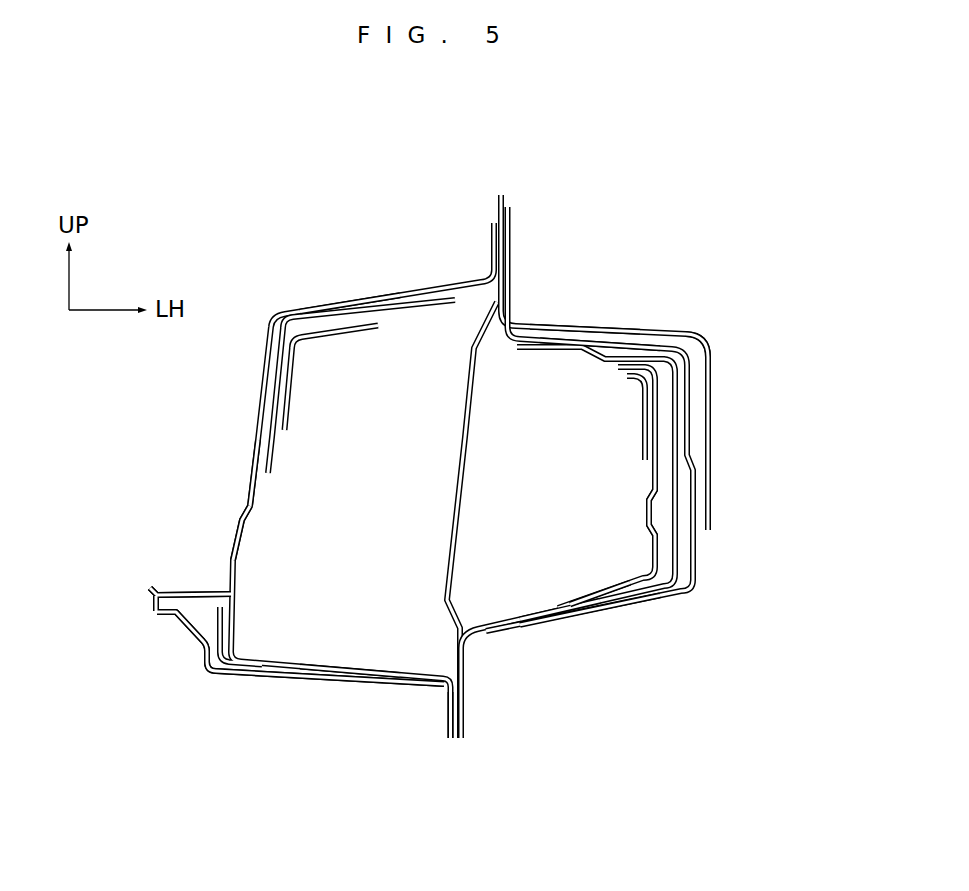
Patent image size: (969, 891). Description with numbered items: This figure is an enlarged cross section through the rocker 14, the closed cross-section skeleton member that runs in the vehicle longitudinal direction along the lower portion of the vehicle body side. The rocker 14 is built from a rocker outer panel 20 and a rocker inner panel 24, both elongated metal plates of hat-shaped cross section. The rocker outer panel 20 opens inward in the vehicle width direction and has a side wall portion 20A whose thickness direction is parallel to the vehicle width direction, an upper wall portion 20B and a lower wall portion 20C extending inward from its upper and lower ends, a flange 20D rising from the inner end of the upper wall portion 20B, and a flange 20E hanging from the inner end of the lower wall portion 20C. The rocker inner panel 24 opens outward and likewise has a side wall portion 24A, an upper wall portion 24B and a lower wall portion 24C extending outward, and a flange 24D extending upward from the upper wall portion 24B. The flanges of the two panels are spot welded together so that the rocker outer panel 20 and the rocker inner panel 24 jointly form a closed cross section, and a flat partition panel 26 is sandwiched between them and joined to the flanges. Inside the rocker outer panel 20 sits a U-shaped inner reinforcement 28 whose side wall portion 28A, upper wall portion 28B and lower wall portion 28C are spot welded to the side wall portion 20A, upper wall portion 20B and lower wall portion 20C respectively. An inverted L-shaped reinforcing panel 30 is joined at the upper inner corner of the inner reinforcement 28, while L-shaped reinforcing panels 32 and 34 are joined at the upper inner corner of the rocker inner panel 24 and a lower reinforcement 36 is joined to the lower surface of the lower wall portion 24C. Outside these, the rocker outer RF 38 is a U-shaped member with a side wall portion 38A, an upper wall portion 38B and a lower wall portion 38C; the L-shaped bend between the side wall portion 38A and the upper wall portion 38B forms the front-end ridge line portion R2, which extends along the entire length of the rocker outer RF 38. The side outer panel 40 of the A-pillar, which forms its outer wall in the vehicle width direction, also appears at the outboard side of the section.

The rocker 14 is at (231, 388).
The rocker outer panel 20 is at (668, 468).
The side wall portion 20A is at (679, 513).
The upper wall portion 20B is at (563, 341).
The lower wall portion 20C is at (563, 618).
The flange 20D is at (511, 252).
The flange 20E is at (465, 708).
The rocker inner panel 24 is at (250, 446).
The side wall portion 24A is at (248, 481).
The upper wall portion 24B is at (380, 298).
The lower wall portion 24C is at (332, 665).
The flange 24D is at (491, 252).
The partition panel 26 is at (457, 487).
The inner reinforcement 28 is at (643, 510).
The side wall portion 28A is at (651, 533).
The upper wall portion 28B is at (548, 351).
The lower wall portion 28C is at (568, 594).
The reinforcing panel 30 is at (641, 424).
The reinforcing panel 32 is at (292, 385).
The reinforcing panel 34 is at (275, 452).
The lower reinforcement 36 is at (337, 685).
The rocker outer RF 38 is at (696, 407).
The side wall portion 38A is at (696, 481).
The upper wall portion 38B is at (631, 345).
The lower wall portion 38C is at (631, 602).
The side outer panel 40 is at (712, 433).
The front-end ridge line portion R2 is at (694, 341).